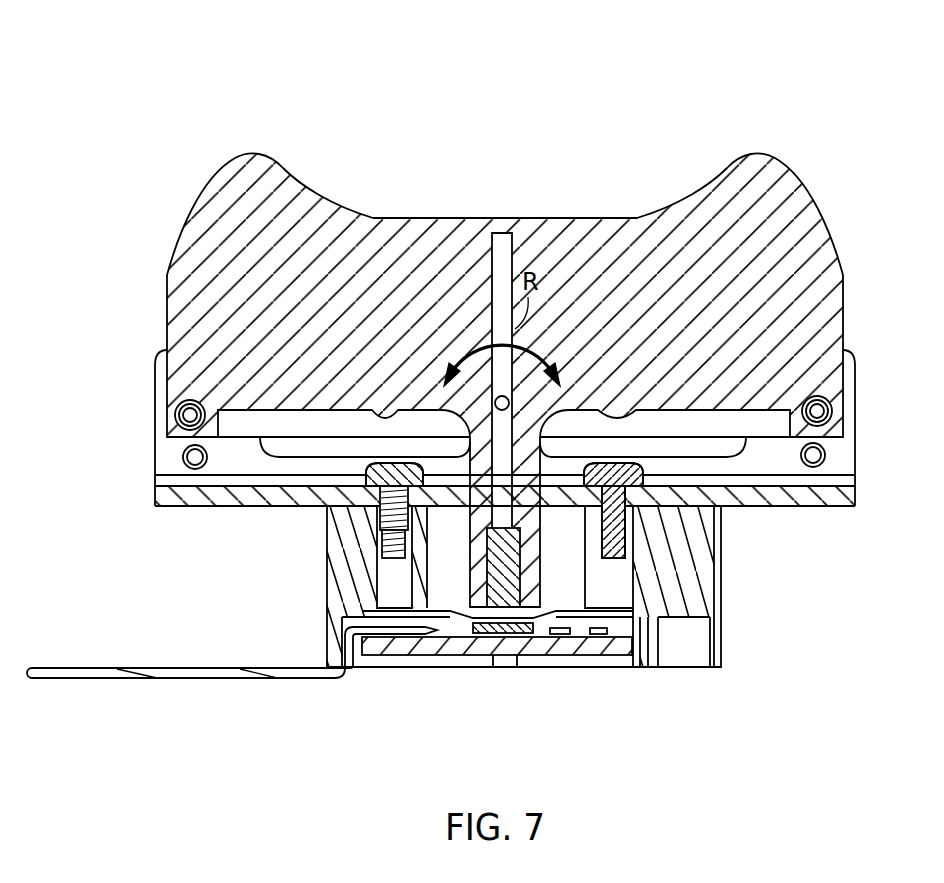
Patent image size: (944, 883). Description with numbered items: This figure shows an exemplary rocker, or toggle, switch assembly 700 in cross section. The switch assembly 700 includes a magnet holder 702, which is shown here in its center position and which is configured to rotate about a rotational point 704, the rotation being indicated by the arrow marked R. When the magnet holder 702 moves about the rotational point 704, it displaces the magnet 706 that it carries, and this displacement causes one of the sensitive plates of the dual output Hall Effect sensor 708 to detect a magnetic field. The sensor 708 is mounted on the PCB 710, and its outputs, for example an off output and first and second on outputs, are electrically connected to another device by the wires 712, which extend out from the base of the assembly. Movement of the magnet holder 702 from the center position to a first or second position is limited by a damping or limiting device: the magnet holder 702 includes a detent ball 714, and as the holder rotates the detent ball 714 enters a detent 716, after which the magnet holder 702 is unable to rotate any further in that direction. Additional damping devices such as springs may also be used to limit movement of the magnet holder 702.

The rocker switch assembly 700 is at (488, 92).
The magnet holder 702 is at (214, 193).
The rotational point 704 is at (492, 404).
The magnet 706 is at (512, 560).
The dual output Hall Effect sensor 708 is at (515, 632).
The PCB 710 is at (428, 645).
The wires 712 is at (128, 681).
The detent ball 714 is at (185, 416).
The detent 716 is at (187, 459).